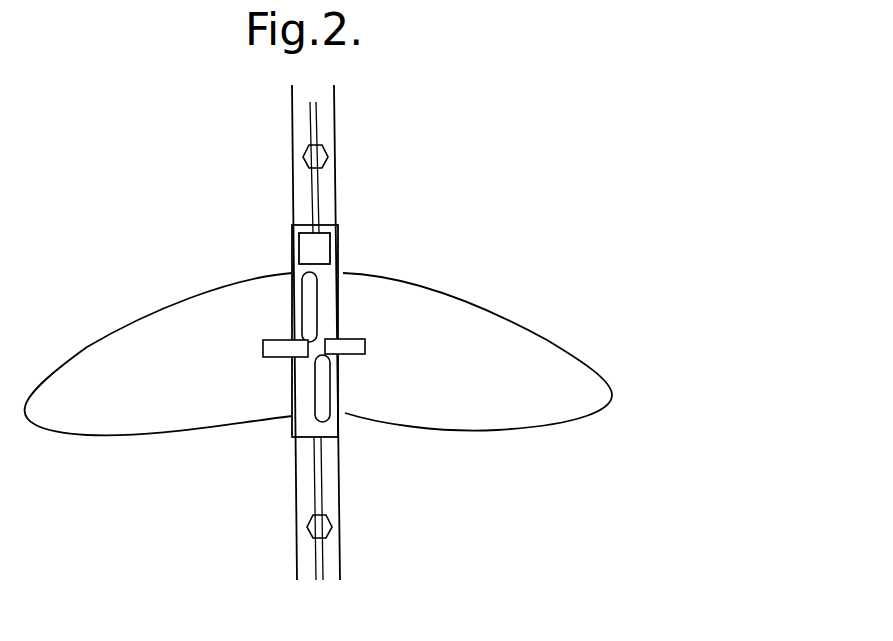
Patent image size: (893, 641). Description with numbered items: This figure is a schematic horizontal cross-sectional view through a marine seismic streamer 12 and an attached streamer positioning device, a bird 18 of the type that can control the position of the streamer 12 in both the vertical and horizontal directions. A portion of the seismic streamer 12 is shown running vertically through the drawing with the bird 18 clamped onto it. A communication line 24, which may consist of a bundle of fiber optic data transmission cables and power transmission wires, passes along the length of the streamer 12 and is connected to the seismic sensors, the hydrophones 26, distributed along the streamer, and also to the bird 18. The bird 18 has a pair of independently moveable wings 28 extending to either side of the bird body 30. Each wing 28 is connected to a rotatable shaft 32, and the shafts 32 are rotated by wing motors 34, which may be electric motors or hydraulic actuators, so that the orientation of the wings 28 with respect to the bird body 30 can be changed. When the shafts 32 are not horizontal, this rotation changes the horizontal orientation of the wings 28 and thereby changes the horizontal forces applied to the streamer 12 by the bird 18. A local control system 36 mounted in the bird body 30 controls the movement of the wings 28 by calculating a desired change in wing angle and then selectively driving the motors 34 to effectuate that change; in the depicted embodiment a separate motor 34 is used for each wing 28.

The seismic streamer 12 is at (327, 117).
The bird 18 is at (488, 210).
The communication line 24 is at (317, 185).
The hydrophones 26 is at (303, 153).
The wings 28 is at (145, 318).
The bird body 30 is at (334, 428).
The rotatable shafts 32 is at (263, 348).
The wing motors 34 is at (305, 300).
The local control system 36 is at (323, 246).